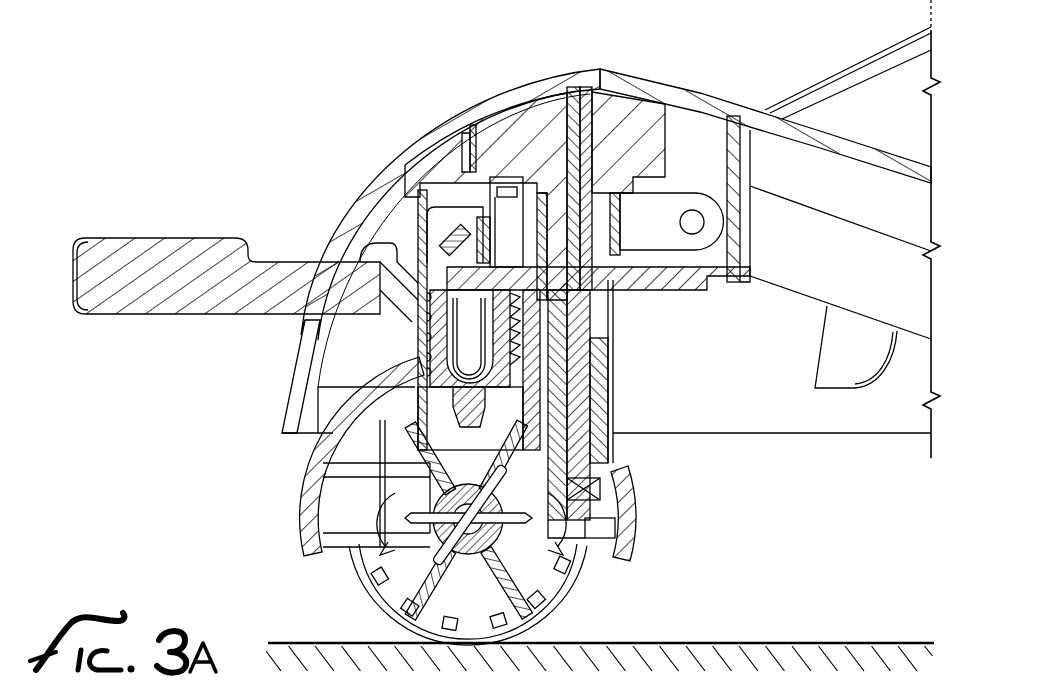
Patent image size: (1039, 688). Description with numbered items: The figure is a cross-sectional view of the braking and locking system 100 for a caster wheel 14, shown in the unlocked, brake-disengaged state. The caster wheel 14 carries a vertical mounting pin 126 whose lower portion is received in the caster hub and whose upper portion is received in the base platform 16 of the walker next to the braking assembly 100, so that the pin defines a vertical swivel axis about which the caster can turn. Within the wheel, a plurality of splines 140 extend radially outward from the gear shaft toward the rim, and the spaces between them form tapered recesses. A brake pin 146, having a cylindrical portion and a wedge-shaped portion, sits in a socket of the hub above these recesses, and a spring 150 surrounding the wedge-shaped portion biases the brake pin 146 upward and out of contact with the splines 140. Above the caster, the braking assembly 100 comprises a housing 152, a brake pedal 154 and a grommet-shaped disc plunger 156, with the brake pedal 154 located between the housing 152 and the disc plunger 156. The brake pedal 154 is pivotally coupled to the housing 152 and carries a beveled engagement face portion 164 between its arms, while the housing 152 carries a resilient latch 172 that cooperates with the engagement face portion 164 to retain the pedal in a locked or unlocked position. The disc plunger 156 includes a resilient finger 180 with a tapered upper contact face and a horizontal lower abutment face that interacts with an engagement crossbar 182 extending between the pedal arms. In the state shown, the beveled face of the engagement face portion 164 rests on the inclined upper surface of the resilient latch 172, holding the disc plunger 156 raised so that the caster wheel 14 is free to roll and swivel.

The braking and locking system 100 is at (181, 66).
The caster wheel 14 is at (690, 518).
The base platform 16 is at (822, 133).
The vertical mounting pin 126 is at (583, 160).
The splines 140 is at (500, 488).
The brake pin 146 is at (460, 423).
The spring 150 is at (520, 350).
The housing 152 is at (437, 188).
The brake pedal 154 is at (156, 222).
The disc plunger 156 is at (700, 280).
The engagement face portion 164 is at (377, 243).
The resilient latch 172 is at (392, 315).
The resilient finger 180 is at (477, 223).
The engagement crossbar 182 is at (457, 243).